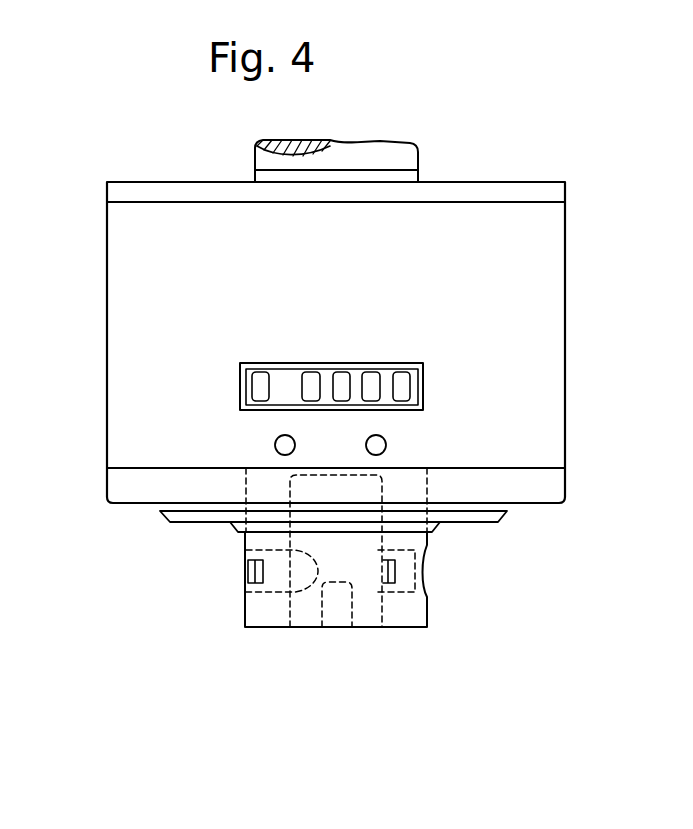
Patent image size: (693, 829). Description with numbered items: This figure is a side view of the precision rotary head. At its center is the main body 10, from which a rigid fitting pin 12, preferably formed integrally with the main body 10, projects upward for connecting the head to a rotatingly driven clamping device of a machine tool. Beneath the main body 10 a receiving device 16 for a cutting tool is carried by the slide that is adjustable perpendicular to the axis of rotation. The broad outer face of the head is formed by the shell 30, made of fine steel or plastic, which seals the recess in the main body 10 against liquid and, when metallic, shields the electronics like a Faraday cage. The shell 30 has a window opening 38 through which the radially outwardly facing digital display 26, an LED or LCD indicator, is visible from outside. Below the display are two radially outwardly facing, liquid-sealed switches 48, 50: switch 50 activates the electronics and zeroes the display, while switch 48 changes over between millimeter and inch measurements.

The main body 10 is at (395, 304).
The rigid fitting pin 12 is at (386, 152).
The receiving device 16 is at (430, 608).
The digital display 26 is at (400, 387).
The shell 30 is at (514, 239).
The window opening 38 is at (276, 366).
The switch 48 is at (283, 447).
The switch 50 is at (378, 446).